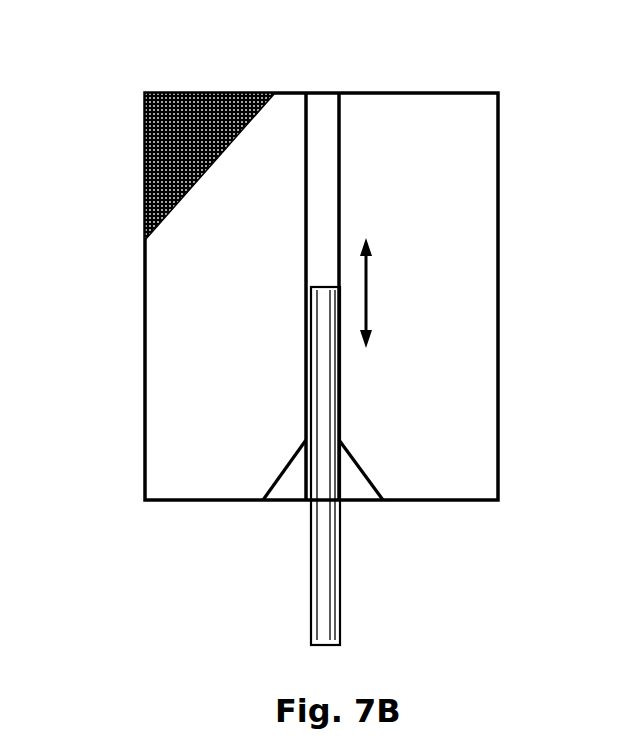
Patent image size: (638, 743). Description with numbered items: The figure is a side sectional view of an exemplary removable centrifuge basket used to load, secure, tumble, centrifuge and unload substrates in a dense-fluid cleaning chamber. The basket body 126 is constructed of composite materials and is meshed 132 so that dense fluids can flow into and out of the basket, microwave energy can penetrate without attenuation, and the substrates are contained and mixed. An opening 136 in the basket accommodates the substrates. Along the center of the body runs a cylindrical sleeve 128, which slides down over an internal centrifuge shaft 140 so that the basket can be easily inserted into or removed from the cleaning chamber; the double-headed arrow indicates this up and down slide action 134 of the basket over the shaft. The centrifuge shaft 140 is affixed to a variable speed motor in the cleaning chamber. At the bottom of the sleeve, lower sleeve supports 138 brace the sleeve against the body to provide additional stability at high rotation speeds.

The basket body 126 is at (176, 92).
The cylindrical sleeve 128 is at (340, 153).
The mesh 132 is at (193, 128).
The up and down slide action 134 is at (368, 300).
The opening 136 is at (446, 391).
The lower sleeve supports 138 is at (357, 487).
The centrifuge shaft 140 is at (302, 573).